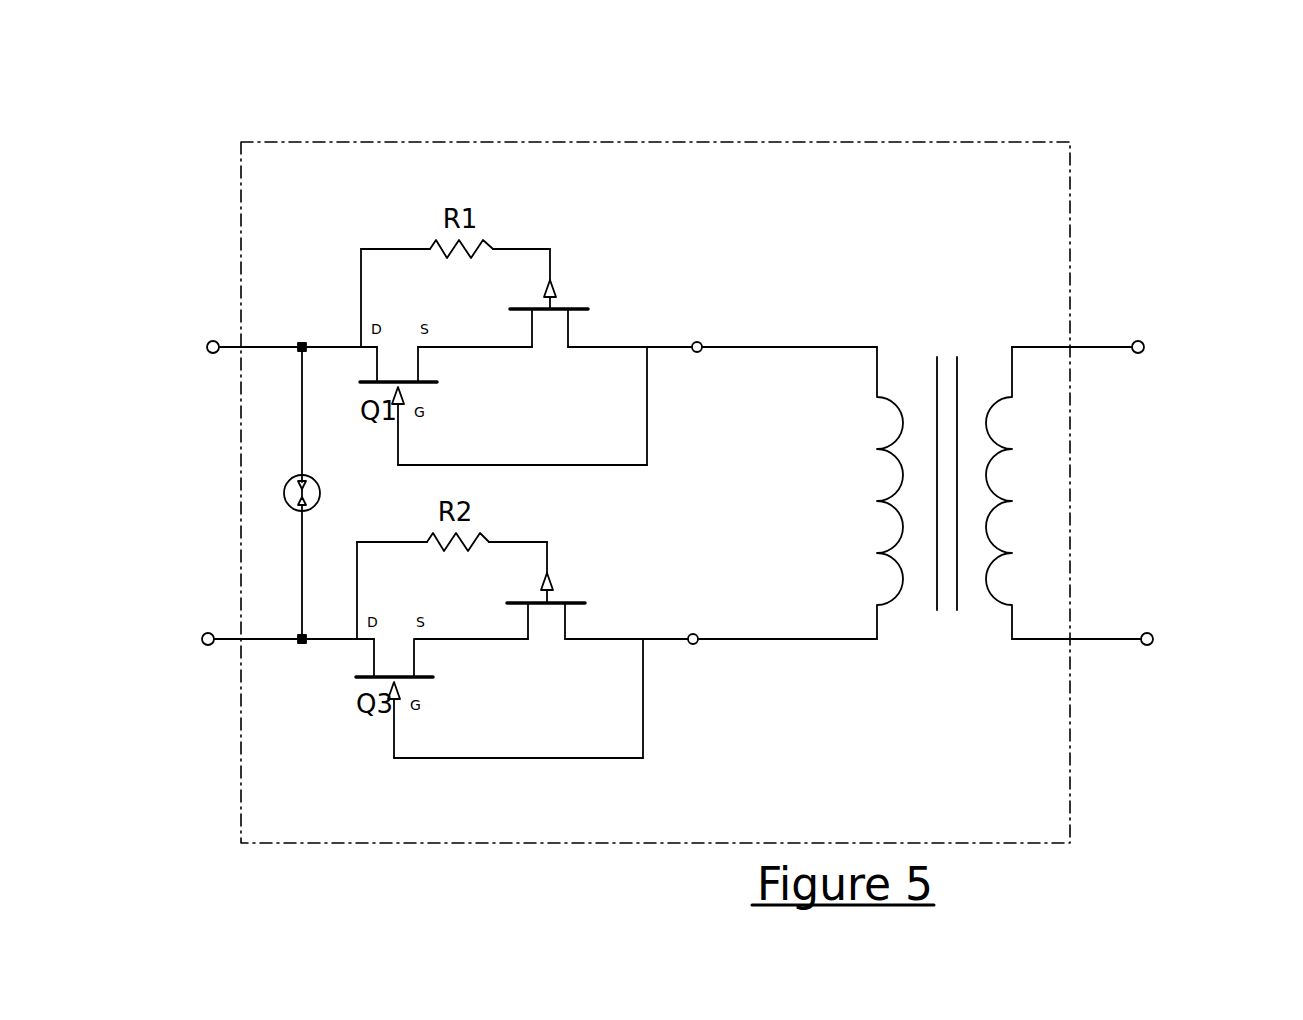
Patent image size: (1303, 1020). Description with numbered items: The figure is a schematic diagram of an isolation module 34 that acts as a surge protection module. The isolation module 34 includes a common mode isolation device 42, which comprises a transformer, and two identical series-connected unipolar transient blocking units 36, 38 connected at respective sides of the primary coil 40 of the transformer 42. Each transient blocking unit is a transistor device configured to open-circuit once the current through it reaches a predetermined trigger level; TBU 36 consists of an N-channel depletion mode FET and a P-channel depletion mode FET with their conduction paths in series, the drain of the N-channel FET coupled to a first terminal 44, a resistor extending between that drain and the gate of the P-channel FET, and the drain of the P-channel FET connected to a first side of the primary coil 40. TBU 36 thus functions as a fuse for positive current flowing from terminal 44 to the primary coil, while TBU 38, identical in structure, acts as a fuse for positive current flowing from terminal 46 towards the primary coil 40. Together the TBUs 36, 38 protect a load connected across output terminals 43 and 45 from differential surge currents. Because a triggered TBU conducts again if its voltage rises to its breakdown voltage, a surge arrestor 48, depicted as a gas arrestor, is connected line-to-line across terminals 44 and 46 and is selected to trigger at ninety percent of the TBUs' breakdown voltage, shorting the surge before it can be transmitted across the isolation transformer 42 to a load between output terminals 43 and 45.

The isolation module 34 is at (735, 120).
The transient blocking unit 36 is at (615, 269).
The transient blocking unit 38 is at (630, 579).
The primary coil 40 is at (877, 347).
The common mode isolation device 42 is at (925, 428).
The output terminal 43 is at (1144, 343).
The first terminal 44 is at (208, 343).
The output terminal 45 is at (1152, 644).
The terminal 46 is at (203, 644).
The surge arrestor 48 is at (264, 476).